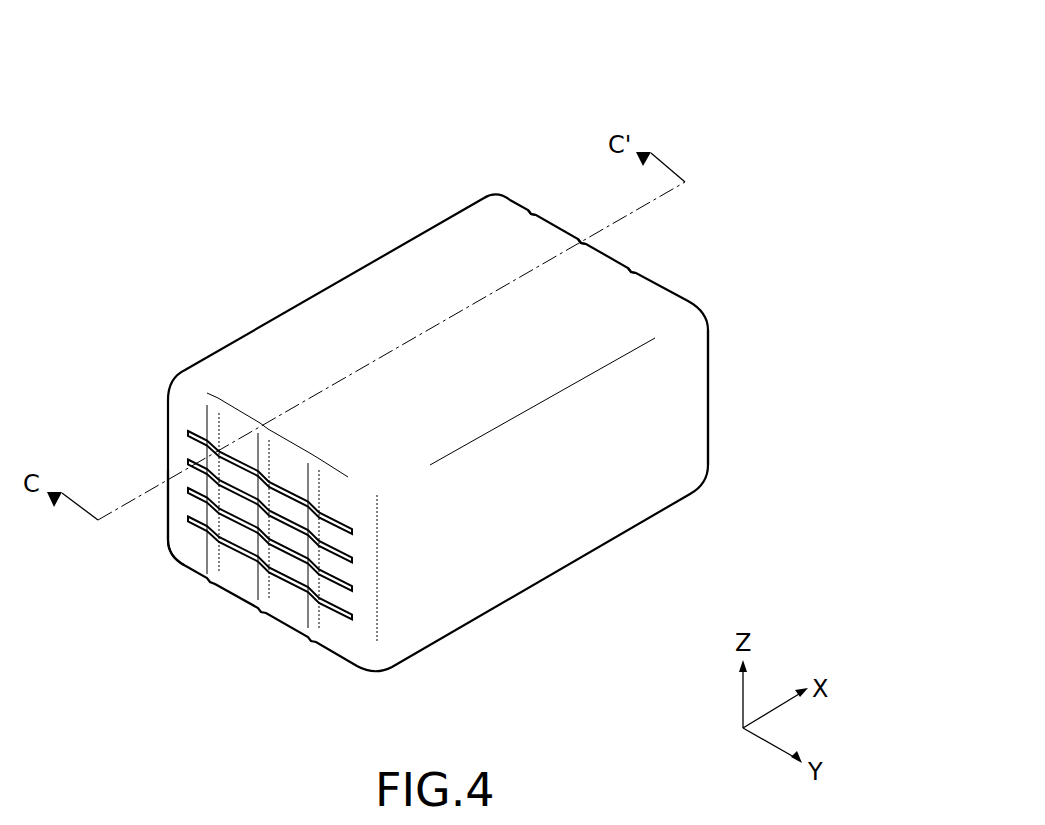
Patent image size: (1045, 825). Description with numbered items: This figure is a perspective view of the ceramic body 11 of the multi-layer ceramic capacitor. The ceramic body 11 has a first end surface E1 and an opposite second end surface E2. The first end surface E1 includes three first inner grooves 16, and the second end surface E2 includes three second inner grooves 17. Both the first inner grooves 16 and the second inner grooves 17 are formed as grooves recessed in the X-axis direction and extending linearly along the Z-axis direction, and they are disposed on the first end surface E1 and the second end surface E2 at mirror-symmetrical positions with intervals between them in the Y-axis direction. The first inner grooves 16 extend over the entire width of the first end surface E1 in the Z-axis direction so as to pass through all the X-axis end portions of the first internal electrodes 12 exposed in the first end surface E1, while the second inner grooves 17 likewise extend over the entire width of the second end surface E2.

The ceramic body 11 is at (512, 158).
The first internal electrodes 12 is at (188, 517).
The first inner grooves 16 is at (215, 558).
The second inner grooves 17 is at (537, 211).
The first end surface E1 is at (190, 543).
The second end surface E2 is at (725, 347).